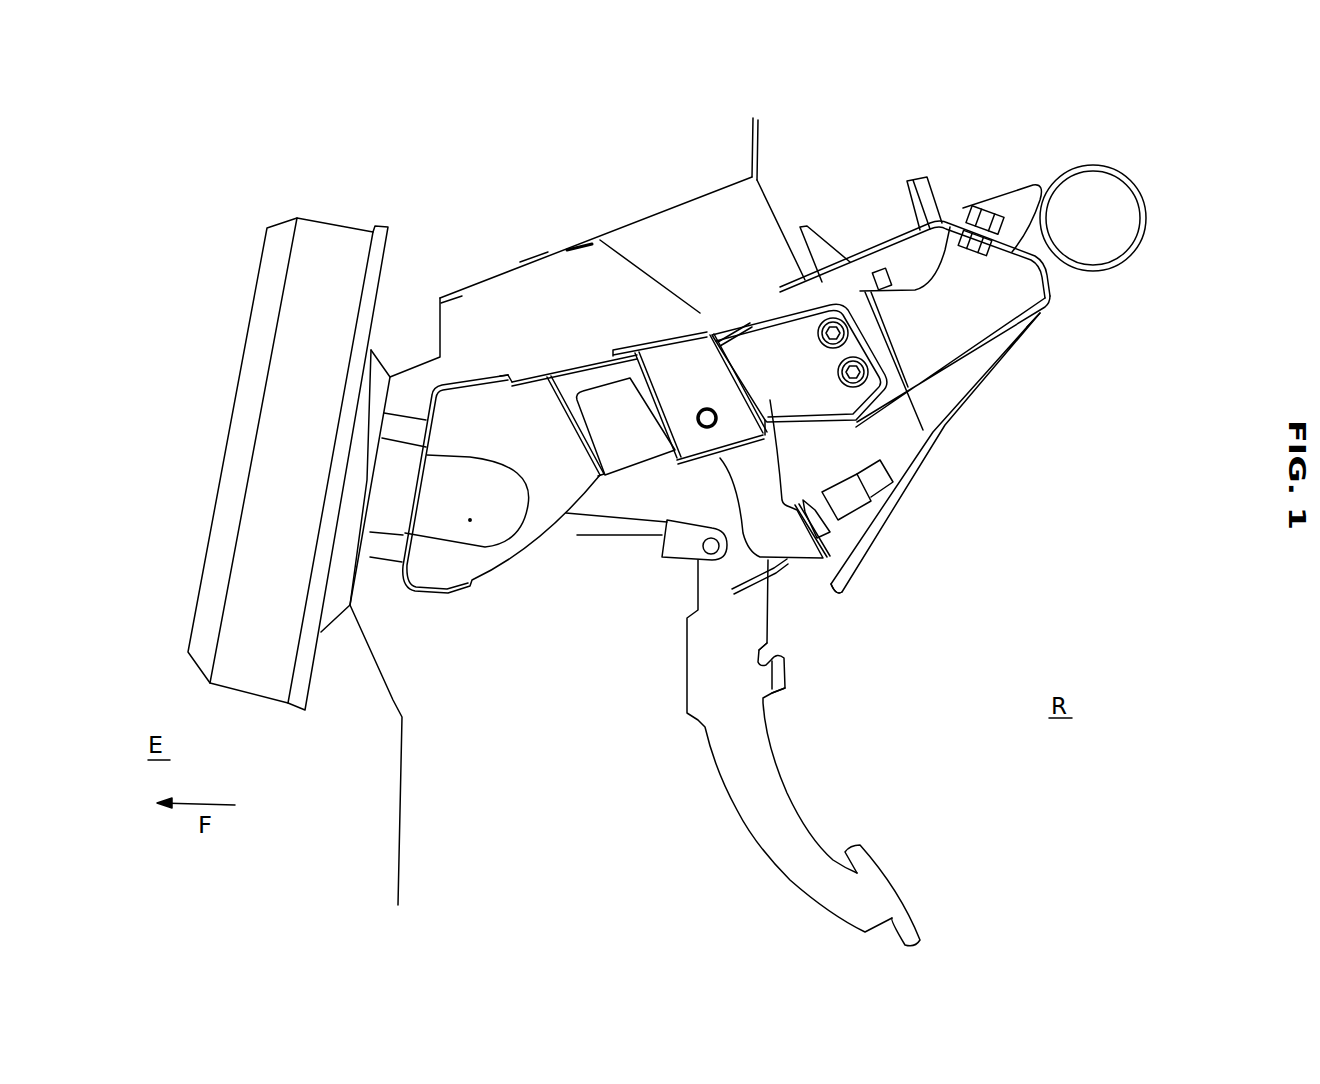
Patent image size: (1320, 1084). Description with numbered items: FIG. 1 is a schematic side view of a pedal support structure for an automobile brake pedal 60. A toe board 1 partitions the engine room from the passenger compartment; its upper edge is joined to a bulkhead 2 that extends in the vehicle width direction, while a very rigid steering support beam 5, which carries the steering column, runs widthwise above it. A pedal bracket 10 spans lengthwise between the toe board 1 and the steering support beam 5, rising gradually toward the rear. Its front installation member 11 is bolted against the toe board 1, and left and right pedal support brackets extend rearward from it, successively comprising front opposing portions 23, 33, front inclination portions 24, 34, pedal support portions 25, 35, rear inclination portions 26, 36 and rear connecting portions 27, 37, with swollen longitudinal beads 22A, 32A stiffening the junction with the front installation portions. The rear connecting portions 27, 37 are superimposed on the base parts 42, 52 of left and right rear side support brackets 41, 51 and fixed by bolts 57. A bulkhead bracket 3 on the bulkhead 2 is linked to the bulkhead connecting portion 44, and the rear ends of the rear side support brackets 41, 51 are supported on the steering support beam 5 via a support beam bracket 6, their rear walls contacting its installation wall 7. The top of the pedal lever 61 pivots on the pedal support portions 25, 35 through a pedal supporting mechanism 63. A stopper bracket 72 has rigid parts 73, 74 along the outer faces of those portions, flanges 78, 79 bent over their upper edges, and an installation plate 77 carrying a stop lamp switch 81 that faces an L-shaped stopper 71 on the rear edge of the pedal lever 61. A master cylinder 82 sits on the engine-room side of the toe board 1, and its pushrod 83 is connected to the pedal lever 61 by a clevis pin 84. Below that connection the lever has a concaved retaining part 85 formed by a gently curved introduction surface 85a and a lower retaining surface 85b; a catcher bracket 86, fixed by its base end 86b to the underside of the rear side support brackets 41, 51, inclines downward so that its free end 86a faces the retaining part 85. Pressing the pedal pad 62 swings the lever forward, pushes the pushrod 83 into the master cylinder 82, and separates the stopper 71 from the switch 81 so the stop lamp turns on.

The toe board 1 is at (400, 840).
The bulkhead 2 is at (533, 260).
The bulkhead bracket 3 is at (763, 195).
The steering support beam 5 is at (1132, 182).
The support beam bracket 6 is at (1013, 198).
The installation wall 7 is at (1033, 185).
The pedal bracket 10 is at (566, 356).
The front installation member 11 is at (398, 592).
The bead 22A is at (501, 531).
The bead 32A is at (460, 532).
The front opposing portion 23 is at (500, 354).
The front opposing portion 33 is at (527, 382).
The front inclination portion 24 is at (602, 372).
The front inclination portion 34 is at (585, 375).
The pedal support portion 25 is at (672, 381).
The pedal support portion 35 is at (630, 352).
The rear inclination portion 26 is at (831, 347).
The rear inclination portion 36 is at (798, 407).
The rear connecting portion 27 is at (845, 235).
The rear connecting portion 37 is at (847, 263).
The rear side support bracket 41 is at (1022, 361).
The rear side support bracket 51 is at (1052, 303).
The base part 42 is at (989, 276).
The base part 52 is at (1007, 283).
The bulkhead connecting portion 44 is at (907, 181).
The bolt 57 is at (818, 336).
The brake pedal 60 is at (791, 753).
The pedal lever 61 is at (740, 767).
The pedal pad 62 is at (890, 872).
The pedal supporting mechanism 63 is at (688, 398).
The stopper 71 is at (738, 586).
The stopper bracket 72 is at (800, 565).
The rigid part 73 is at (632, 485).
The rigid part 74 is at (672, 458).
The installation plate 77 is at (798, 508).
The flange 78 is at (719, 291).
The flange 79 is at (745, 303).
The stop lamp switch 81 is at (875, 477).
The master cylinder 82 is at (268, 427).
The pushrod 83 is at (582, 537).
The clevis pin 84 is at (680, 565).
The concaved retaining part 85 is at (788, 668).
The introduction surface 85a is at (768, 645).
The retaining surface 85b is at (784, 688).
The catcher bracket 86 is at (923, 470).
The free end 86a is at (842, 595).
The base end 86b is at (1023, 327).